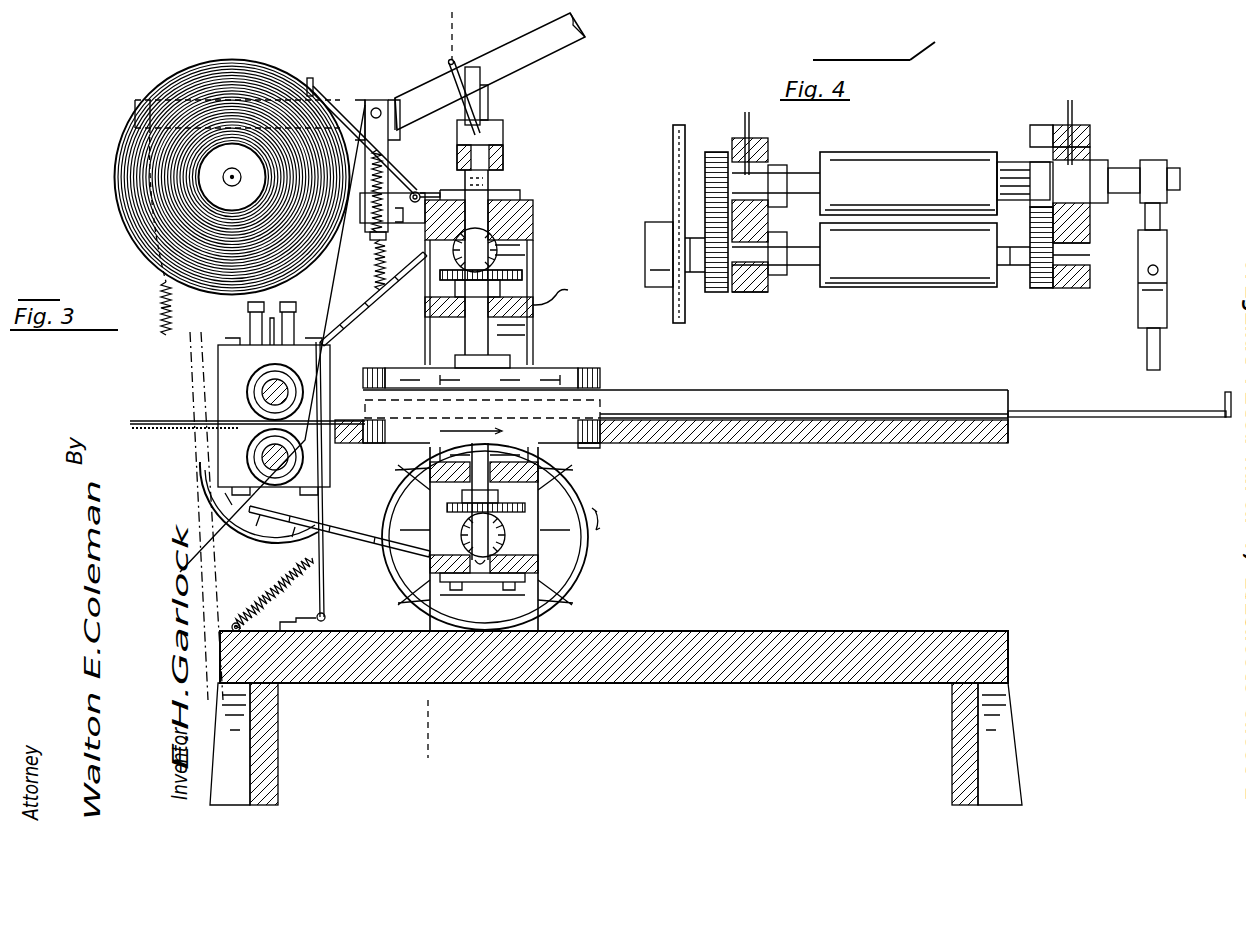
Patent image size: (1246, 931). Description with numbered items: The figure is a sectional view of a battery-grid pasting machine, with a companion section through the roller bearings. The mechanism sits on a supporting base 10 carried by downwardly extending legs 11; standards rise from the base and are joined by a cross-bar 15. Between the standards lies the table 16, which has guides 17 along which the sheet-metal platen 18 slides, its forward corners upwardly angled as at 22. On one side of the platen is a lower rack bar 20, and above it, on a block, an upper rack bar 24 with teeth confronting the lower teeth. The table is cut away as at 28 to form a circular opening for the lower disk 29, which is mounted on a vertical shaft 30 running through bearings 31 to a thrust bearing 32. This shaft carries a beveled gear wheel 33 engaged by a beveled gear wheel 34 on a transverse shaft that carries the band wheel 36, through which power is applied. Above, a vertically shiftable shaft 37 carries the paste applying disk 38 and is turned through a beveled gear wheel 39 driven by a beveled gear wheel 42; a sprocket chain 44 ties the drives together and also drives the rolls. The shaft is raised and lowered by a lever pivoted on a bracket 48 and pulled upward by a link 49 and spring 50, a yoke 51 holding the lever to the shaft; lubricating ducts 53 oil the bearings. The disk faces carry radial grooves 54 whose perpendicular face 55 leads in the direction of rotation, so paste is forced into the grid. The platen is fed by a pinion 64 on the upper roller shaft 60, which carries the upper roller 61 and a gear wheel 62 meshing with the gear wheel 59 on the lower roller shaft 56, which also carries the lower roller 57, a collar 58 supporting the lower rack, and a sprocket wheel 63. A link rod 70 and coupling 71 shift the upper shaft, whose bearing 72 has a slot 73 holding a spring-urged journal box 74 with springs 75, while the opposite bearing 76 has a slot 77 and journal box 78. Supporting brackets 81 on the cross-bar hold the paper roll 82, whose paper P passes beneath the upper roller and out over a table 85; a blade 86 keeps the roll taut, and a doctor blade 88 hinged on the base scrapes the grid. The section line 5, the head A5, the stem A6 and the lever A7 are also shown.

In FIG. 3, the section line 5 is at (436, 393).
In FIG. 3, the supporting base 10 is at (765, 630).
In FIG. 3, the supporting legs 11 is at (228, 780).
In FIG. 3, the cross-bar 15 is at (535, 205).
In FIG. 3, the table 16 is at (848, 440).
In FIG. 3, the guides 17 is at (925, 392).
In FIG. 3, the platen 18 is at (1112, 418).
In FIG. 4, the lower rack bar 20 is at (1030, 212).
In FIG. 3, the upwardly angled corners 22 is at (1222, 395).
In FIG. 4, the upper rack bar 24 is at (1040, 136).
In FIG. 3, the cut-away opening 28 is at (598, 447).
In FIG. 3, the lower disk 29 is at (575, 450).
In FIG. 3, the vertical shaft 30 is at (472, 487).
In FIG. 3, the bearings 31 is at (430, 470).
In FIG. 3, the thrust bearing 32 is at (487, 583).
In FIG. 3, the beveled gear wheel 33 is at (526, 507).
In FIG. 3, the beveled gear wheel 34 is at (505, 535).
In FIG. 3, the band wheel 36 is at (588, 572).
In FIG. 3, the vertical shaft 37 is at (492, 182).
In FIG. 3, the paste applying disk 38 is at (580, 366).
In FIG. 3, the beveled gear wheel 39 is at (524, 273).
In FIG. 3, the beveled gear wheel 42 is at (497, 249).
In FIG. 3, the sprocket chain 44 is at (356, 325).
In FIG. 3, the bracket 48 is at (378, 108).
In FIG. 3, the link 49 is at (178, 300).
In FIG. 3, the spring 50 is at (166, 333).
In FIG. 3, the yoke 51 is at (458, 63).
In FIG. 3, the lubricating ducts 53 is at (570, 291).
In FIG. 3, the radial grooves 54 is at (425, 384).
In FIG. 3, the perpendicular face 55 is at (555, 430).
In FIG. 3, the lower roller shaft 56 is at (268, 462).
In FIG. 4, the lower roller shaft 56 is at (1002, 268).
In FIG. 3, the lower roller 57 is at (262, 457).
In FIG. 4, the lower roller 57 is at (862, 270).
In FIG. 4, the collar 58 is at (1040, 290).
In FIG. 4, the gear wheel 59 is at (716, 292).
In FIG. 3, the upper roller shaft 60 is at (262, 392).
In FIG. 4, the upper roller shaft 60 is at (822, 186).
In FIG. 3, the upper roller 61 is at (265, 380).
In FIG. 4, the upper roller 61 is at (940, 154).
In FIG. 4, the gear wheel 62 is at (716, 150).
In FIG. 3, the sprocket wheel 63 is at (272, 520).
In FIG. 4, the pinion 64 is at (1017, 172).
In FIG. 4, the link rod 70 is at (1147, 354).
In FIG. 4, the coupling 71 is at (1162, 250).
In FIG. 4, the bearing 72 is at (762, 290).
In FIG. 4, the slot 73 is at (760, 142).
In FIG. 4, the journal box 74 is at (778, 166).
In FIG. 4, the springs 75 is at (770, 208).
In FIG. 4, the opposite bearing 76 is at (1082, 288).
In FIG. 4, the slot 77 is at (1090, 152).
In FIG. 4, the journal box 78 is at (1100, 205).
In FIG. 3, the supporting brackets 81 is at (360, 100).
In FIG. 3, the paper roll 82 is at (190, 78).
In FIG. 3, the table 85 is at (124, 430).
In FIG. 3, the blade 86 is at (310, 78).
In FIG. 3, the doctor blade 88 is at (328, 592).
In FIG. 3, the nut A5 is at (505, 152).
In FIG. 3, the lever plate A6 is at (492, 108).
In FIG. 3, the lever arm A7 is at (585, 27).
In FIG. 3, the paper P is at (328, 300).